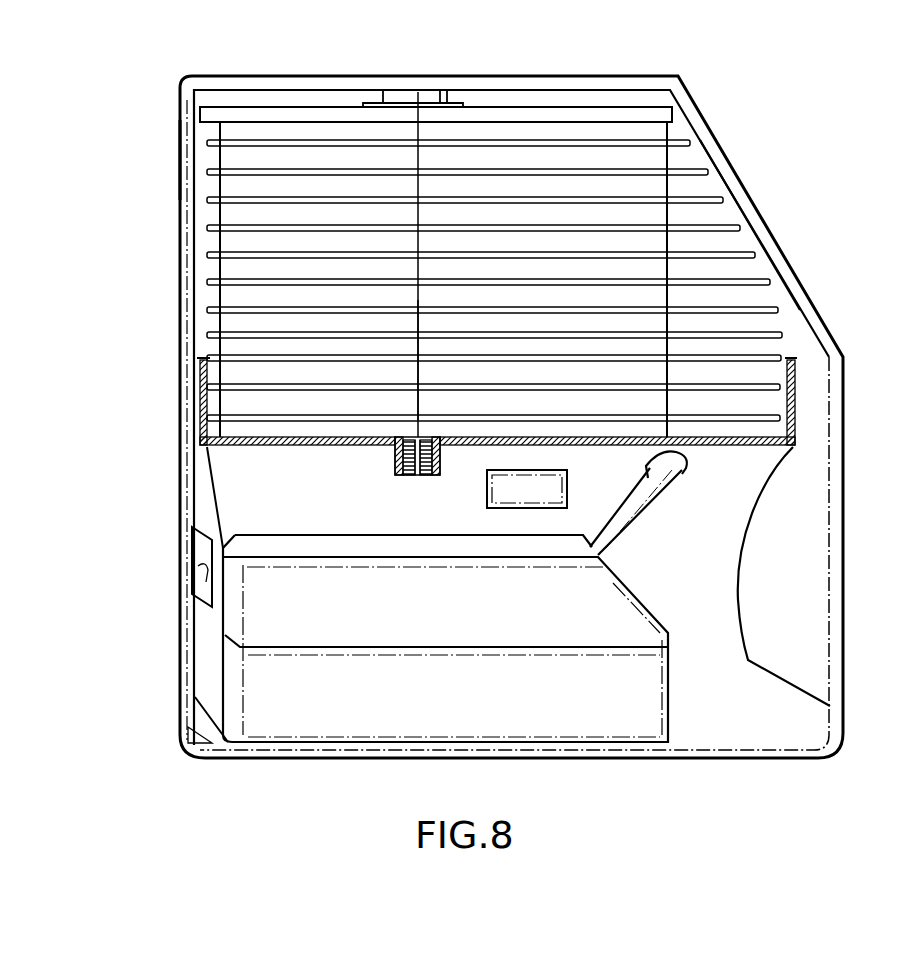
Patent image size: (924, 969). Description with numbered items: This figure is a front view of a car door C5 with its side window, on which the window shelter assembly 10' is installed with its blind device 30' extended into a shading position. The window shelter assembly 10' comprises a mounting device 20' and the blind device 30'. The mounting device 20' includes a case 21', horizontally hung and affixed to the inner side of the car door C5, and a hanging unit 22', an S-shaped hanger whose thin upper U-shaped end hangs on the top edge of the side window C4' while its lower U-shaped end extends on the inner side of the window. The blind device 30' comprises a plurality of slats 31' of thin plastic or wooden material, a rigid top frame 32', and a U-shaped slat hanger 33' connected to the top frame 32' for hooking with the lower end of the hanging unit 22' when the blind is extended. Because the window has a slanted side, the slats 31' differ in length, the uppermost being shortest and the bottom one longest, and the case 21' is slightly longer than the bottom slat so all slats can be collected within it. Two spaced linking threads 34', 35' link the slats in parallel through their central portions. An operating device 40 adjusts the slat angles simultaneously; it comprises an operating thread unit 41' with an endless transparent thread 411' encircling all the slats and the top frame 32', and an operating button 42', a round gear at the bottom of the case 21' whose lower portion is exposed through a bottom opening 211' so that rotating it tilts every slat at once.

The window shelter assembly 10' is at (455, 417).
The linking thread 34' is at (129, 160).
The blind device 30' is at (811, 227).
The linking thread 35' is at (735, 250).
The top frame 32' is at (436, 225).
The hanging unit 22' is at (459, 60).
The slat hanger 33' is at (435, 59).
The slat C4' is at (524, 177).
The slat 31' is at (548, 314).
The endless transparent thread 411' is at (321, 299).
The operating thread unit 41' is at (361, 399).
The operating button 42' is at (496, 423).
The case 21' is at (853, 401).
The operating device 40 is at (430, 480).
The bottom opening 211' is at (387, 490).
The mounting device 20' is at (509, 594).
The car door C5 is at (445, 638).